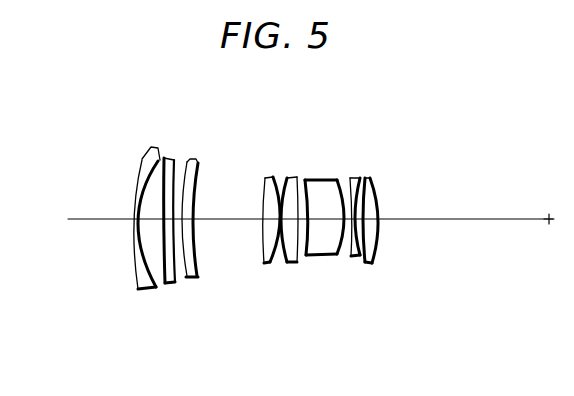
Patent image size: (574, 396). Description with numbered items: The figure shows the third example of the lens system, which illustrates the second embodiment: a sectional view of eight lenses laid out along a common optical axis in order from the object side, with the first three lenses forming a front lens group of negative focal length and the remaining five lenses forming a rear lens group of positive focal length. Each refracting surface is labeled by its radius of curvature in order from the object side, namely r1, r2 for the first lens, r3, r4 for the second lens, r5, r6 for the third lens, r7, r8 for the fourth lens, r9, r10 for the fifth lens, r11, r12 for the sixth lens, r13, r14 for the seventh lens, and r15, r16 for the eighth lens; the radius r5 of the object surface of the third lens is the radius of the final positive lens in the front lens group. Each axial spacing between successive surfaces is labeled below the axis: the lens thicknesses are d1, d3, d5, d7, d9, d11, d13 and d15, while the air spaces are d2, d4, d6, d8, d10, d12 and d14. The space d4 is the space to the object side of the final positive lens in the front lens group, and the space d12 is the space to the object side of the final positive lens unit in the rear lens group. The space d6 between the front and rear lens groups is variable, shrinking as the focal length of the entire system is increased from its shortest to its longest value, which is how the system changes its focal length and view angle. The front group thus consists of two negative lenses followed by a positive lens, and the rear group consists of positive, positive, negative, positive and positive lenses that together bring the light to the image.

The radius of curvature of the first lens surface r1 is at (142, 158).
The radius of curvature of the second lens surface r2 is at (150, 147).
The radius of curvature of the third lens surface r3 is at (167, 157).
The radius of curvature of the fourth lens surface r4 is at (178, 159).
The radius of curvature of the fifth lens surface r5 is at (189, 160).
The radius of curvature of the sixth lens surface r6 is at (200, 162).
The radius of curvature of the seventh lens surface r7 is at (264, 182).
The radius of curvature of the eighth lens surface r8 is at (268, 176).
The radius of curvature of the ninth lens surface r9 is at (287, 177).
The radius of curvature of the tenth lens surface r10 is at (297, 176).
The radius of curvature of the eleventh lens surface r11 is at (307, 179).
The radius of curvature of the twelfth lens surface r12 is at (337, 178).
The radius of curvature of the thirteenth lens surface r13 is at (349, 180).
The radius of curvature of the fourteenth lens surface r14 is at (359, 177).
The radius of curvature of the fifteenth lens surface r15 is at (365, 177).
The radius of curvature of the sixteenth lens surface r16 is at (372, 181).
The axial distance between the first and second surfaces d1 is at (132, 222).
The axial distance between the second and third surfaces d2 is at (150, 222).
The axial distance between the third and fourth surfaces d3 is at (167, 226).
The axial distance between the fourth and fifth surfaces d4 is at (177, 224).
The axial distance between the fifth and sixth surfaces d5 is at (190, 258).
The axial distance between the sixth and seventh surfaces d6 is at (223, 223).
The axial distance between the seventh and eighth surfaces d7 is at (268, 225).
The axial distance between the eighth and ninth surfaces d8 is at (280, 226).
The axial distance between the ninth and tenth surfaces d9 is at (285, 245).
The axial distance between the tenth and eleventh surfaces d10 is at (302, 226).
The axial distance between the eleventh and twelfth surfaces d11 is at (322, 230).
The axial distance between the twelfth and thirteenth surfaces d12 is at (347, 225).
The axial distance between the thirteenth and fourteenth surfaces d13 is at (355, 250).
The axial distance between the fourteenth and fifteenth surfaces d14 is at (361, 235).
The axial distance between the fifteenth and sixteenth surfaces d15 is at (372, 226).